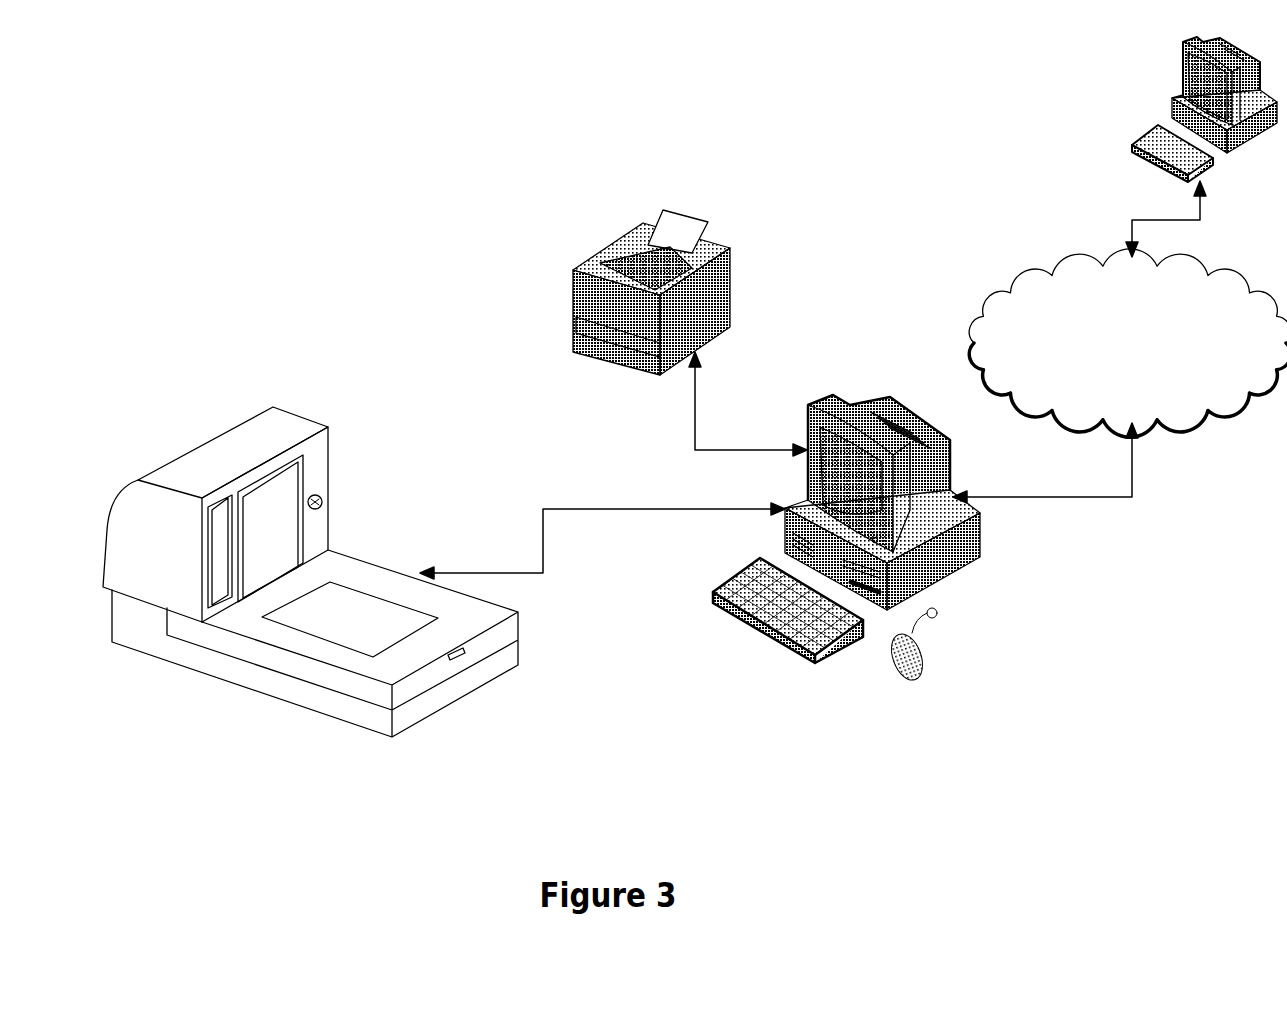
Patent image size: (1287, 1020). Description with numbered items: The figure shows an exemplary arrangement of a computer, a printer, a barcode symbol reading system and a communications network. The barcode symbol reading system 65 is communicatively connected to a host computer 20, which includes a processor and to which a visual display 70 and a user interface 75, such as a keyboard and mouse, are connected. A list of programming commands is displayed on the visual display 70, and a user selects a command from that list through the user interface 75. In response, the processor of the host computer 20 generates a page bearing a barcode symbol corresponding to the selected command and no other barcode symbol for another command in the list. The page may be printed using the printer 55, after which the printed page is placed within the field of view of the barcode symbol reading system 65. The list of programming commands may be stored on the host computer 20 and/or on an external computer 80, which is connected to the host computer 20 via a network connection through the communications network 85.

The host computer 20 is at (958, 572).
The printer 55 is at (703, 240).
The barcode symbol reading system 65 is at (313, 450).
The visual display 70 is at (848, 445).
The user interface 75 is at (795, 657).
The external computer 80 is at (1173, 98).
The communications network 85 is at (1128, 343).